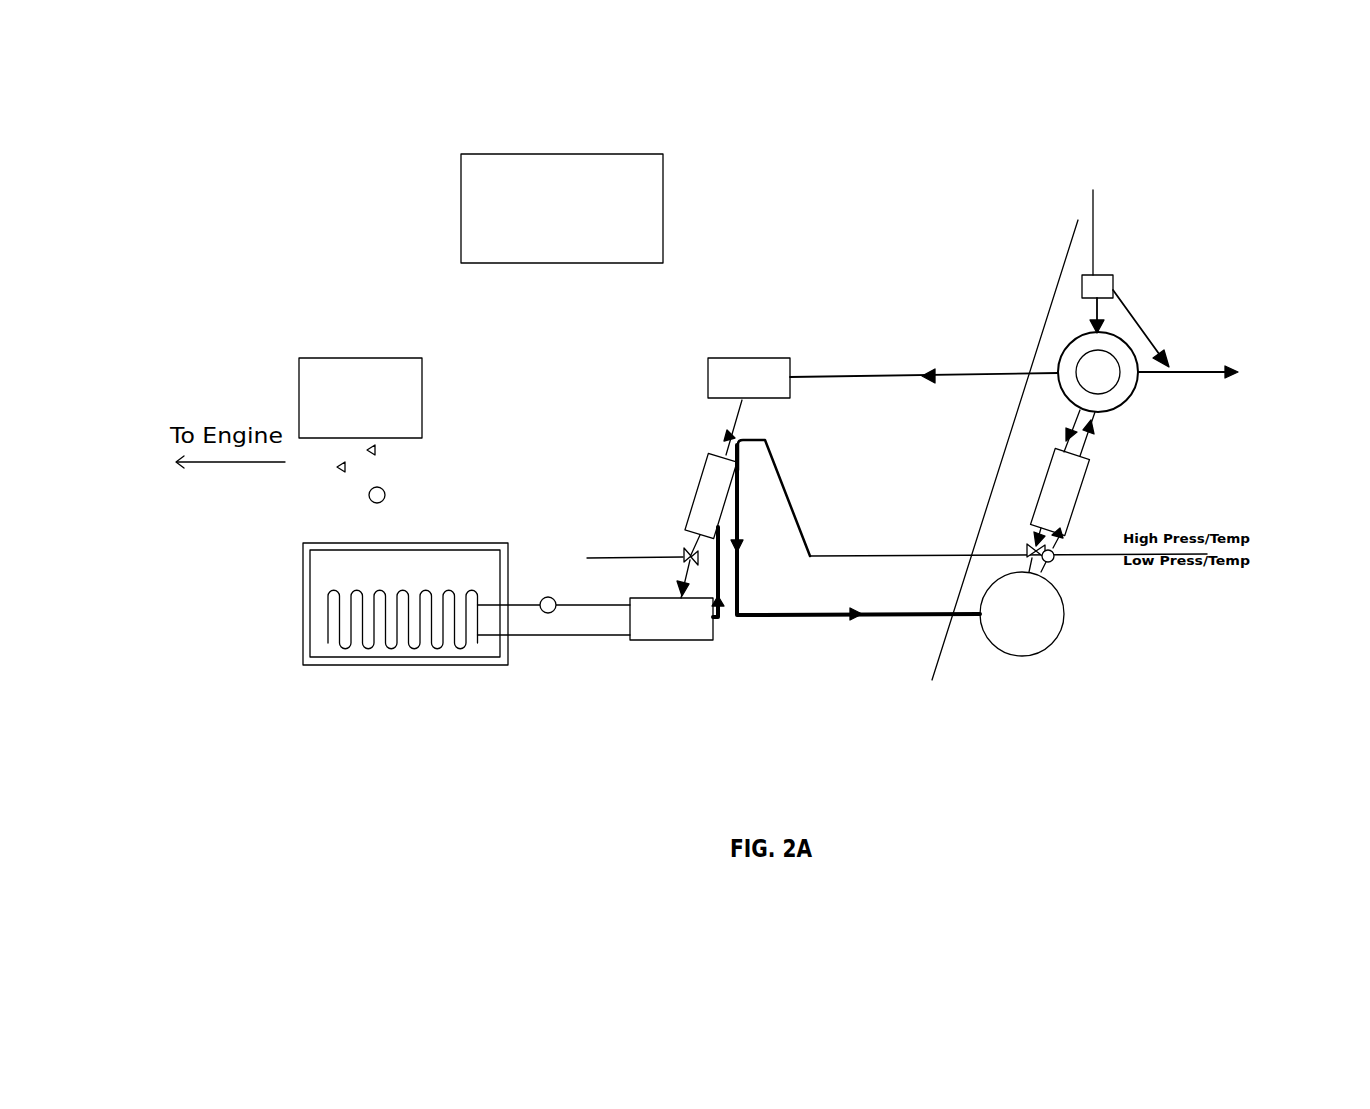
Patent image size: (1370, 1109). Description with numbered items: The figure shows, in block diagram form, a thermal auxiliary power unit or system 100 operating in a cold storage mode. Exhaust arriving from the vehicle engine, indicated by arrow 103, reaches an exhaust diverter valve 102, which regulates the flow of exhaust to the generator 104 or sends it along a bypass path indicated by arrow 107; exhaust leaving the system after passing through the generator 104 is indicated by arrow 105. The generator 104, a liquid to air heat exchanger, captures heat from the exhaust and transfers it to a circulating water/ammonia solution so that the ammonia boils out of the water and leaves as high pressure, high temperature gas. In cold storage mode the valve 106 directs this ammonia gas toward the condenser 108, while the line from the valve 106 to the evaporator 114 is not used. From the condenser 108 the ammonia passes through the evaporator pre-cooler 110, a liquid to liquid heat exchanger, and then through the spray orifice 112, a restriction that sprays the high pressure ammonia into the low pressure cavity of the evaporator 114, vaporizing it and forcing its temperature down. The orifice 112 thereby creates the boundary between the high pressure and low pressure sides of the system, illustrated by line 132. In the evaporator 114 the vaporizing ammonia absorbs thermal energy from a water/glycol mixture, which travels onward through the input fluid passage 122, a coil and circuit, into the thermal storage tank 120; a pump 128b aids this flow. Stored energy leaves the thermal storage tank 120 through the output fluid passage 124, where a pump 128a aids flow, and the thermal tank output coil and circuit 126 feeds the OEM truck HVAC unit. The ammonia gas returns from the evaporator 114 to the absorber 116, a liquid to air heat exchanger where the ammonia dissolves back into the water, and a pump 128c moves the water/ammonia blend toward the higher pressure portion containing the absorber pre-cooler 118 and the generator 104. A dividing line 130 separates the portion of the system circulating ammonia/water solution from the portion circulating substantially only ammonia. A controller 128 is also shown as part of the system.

The thermal auxiliary power unit 100 is at (298, 210).
The exhaust diverter valve 102 is at (1113, 277).
The exhaust arriving from the engine 103 is at (1093, 243).
The generator 104 is at (1112, 408).
The exhaust leaving the system 105 is at (1215, 382).
The valve 106 is at (997, 375).
The bypass path 107 is at (1133, 307).
The condenser 108 is at (708, 388).
The evaporator pre-cooler 110 is at (740, 470).
The spray orifice 112 is at (683, 558).
The evaporator 114 is at (713, 632).
The absorber 116 is at (982, 627).
The absorber pre-cooler 118 is at (1050, 457).
The thermal storage tank 120 is at (387, 541).
The input fluid passage 122 is at (513, 635).
The output fluid passage 124 is at (348, 543).
The thermal tank output coil and circuit 126 is at (422, 415).
The controller 128 is at (663, 210).
The pump 128a is at (385, 495).
The pump 128b is at (546, 597).
The pump 128c is at (1052, 568).
The dividing line 130 is at (1053, 277).
The pressure boundary line 132 is at (840, 550).